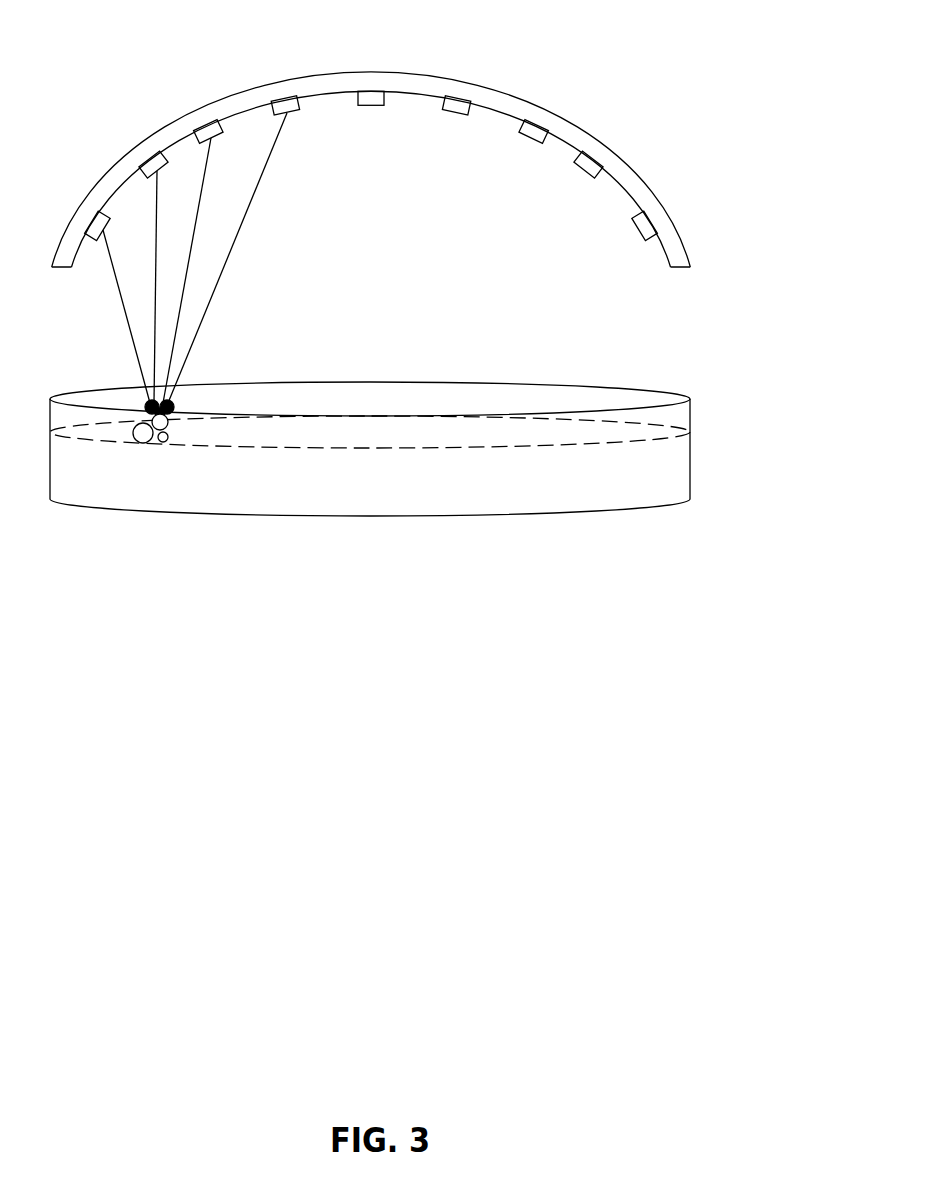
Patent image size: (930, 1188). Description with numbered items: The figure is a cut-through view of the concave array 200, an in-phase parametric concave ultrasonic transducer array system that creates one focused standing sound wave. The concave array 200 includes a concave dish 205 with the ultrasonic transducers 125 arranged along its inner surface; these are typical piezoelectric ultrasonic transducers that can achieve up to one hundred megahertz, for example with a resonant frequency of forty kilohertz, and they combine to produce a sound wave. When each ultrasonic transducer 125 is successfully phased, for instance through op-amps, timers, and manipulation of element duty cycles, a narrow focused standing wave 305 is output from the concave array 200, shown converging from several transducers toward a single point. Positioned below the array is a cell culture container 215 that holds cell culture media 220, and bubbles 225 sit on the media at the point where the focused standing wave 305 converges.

The concave array 200 is at (543, 100).
The concave dish 205 is at (372, 74).
The ultrasonic transducers 125 is at (643, 222).
The focused standing wave 305 is at (240, 236).
The cell culture container 215 is at (352, 381).
The cell culture media 220 is at (464, 491).
The bubbles 225 is at (134, 433).